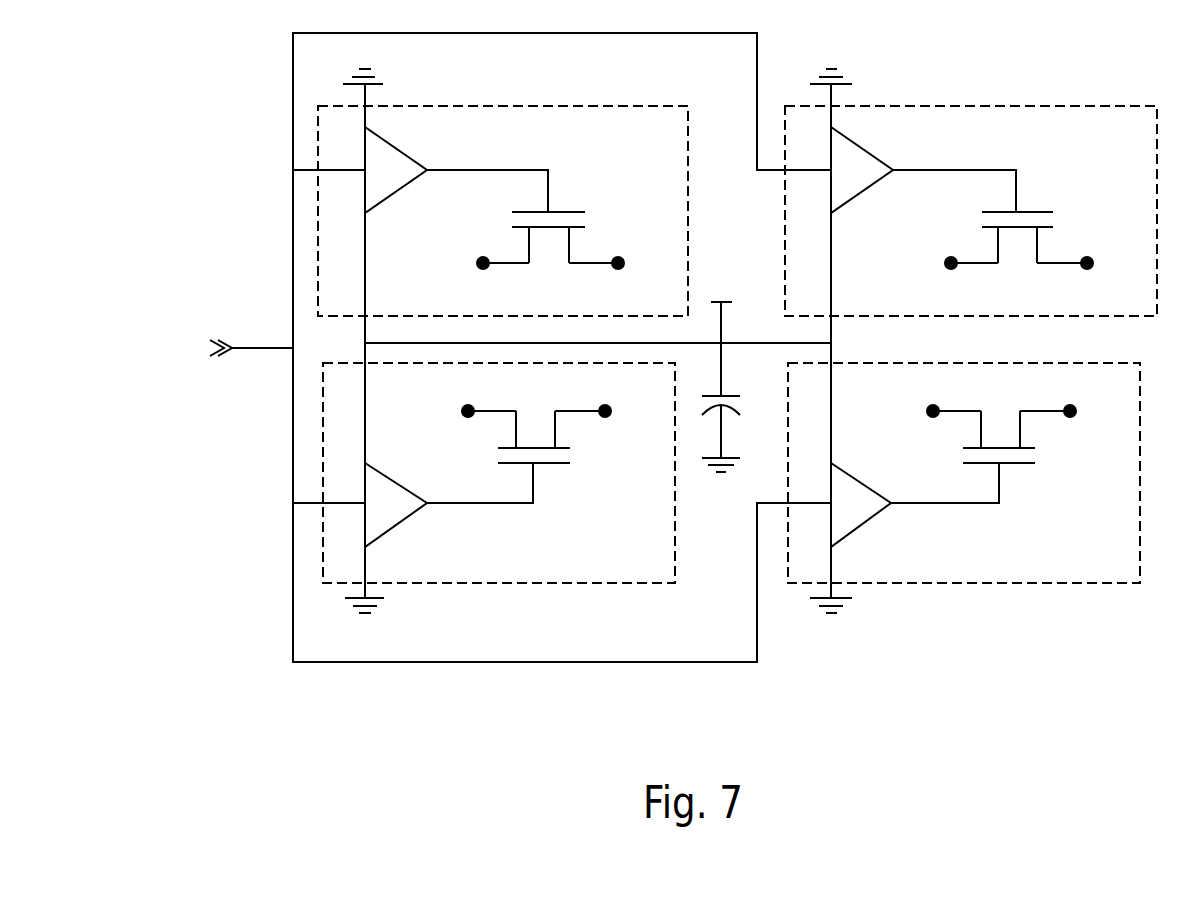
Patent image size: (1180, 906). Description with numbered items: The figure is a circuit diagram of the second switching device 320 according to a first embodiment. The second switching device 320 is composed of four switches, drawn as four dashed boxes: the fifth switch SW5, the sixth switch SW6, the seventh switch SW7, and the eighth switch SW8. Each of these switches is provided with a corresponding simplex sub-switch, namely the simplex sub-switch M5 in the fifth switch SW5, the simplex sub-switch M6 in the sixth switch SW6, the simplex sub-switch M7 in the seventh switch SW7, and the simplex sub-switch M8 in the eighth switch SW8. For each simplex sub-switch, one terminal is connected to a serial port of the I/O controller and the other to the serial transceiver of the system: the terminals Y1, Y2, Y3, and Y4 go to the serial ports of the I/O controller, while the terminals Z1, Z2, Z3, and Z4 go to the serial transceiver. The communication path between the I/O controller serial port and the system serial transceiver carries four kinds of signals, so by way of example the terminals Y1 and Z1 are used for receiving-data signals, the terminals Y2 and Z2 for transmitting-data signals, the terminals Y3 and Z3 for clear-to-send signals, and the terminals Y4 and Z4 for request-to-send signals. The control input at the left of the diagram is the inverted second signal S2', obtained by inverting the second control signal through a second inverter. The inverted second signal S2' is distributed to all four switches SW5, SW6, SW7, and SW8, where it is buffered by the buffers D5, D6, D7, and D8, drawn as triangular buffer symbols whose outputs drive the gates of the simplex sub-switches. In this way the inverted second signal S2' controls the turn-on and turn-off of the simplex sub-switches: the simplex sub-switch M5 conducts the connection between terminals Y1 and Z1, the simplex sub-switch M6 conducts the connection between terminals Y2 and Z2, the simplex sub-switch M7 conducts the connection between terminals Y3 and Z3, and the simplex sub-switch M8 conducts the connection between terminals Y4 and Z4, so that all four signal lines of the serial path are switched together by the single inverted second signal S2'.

The second switching device 320 is at (1092, 740).
The inverted second signal S2' is at (230, 345).
The fifth switch SW5 is at (527, 105).
The sixth switch SW6 is at (995, 105).
The seventh switch SW7 is at (522, 585).
The eighth switch SW8 is at (987, 585).
The buffer D5 is at (388, 197).
The buffer D6 is at (856, 197).
The buffer D7 is at (393, 530).
The buffer D8 is at (857, 530).
The simplex sub-switch M5 is at (593, 208).
The simplex sub-switch M6 is at (1060, 208).
The simplex sub-switch M7 is at (578, 465).
The simplex sub-switch M8 is at (1043, 465).
The terminal Y1 is at (498, 281).
The terminal Z1 is at (600, 281).
The terminal Y2 is at (966, 281).
The terminal Z2 is at (1068, 281).
The terminal Y3 is at (484, 396).
The terminal Z3 is at (586, 396).
The terminal Y4 is at (949, 396).
The terminal Z4 is at (1051, 396).